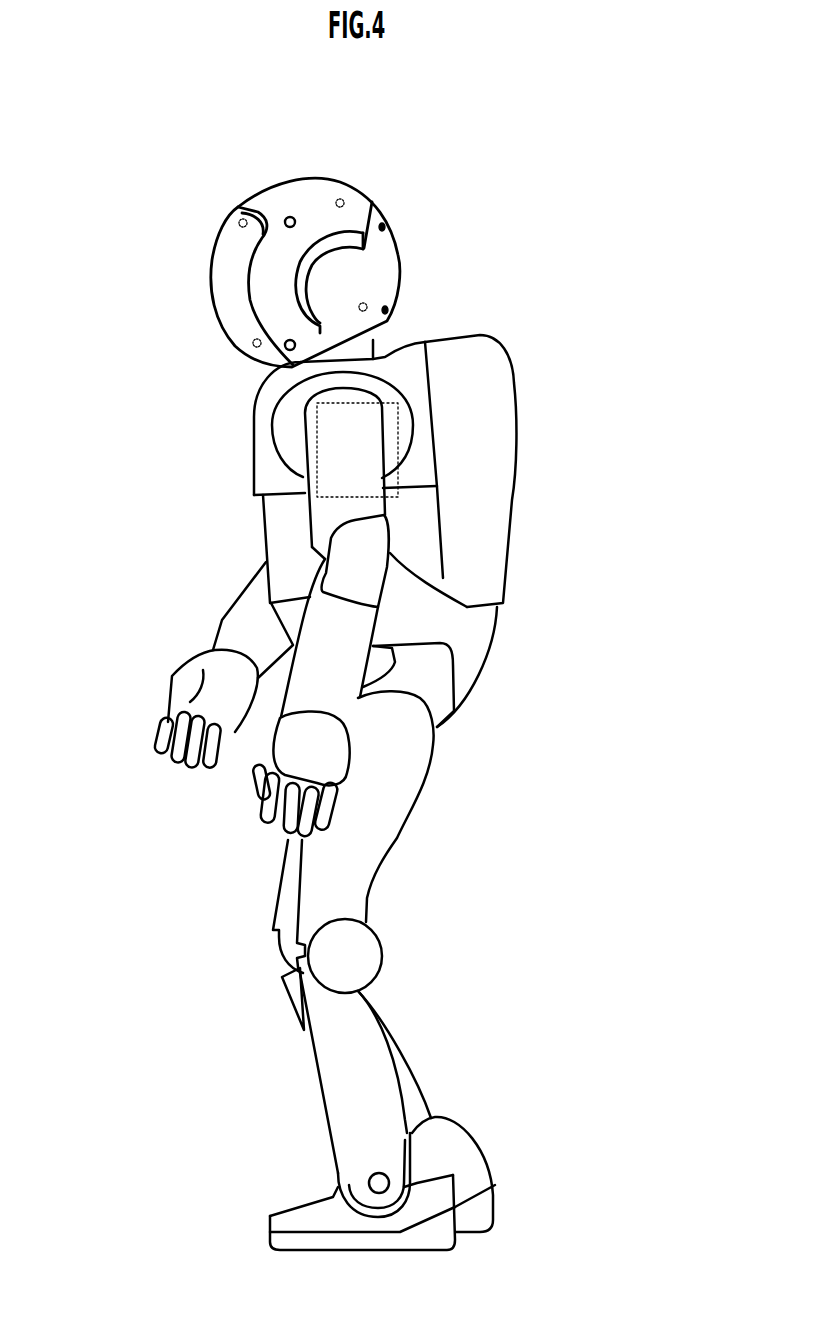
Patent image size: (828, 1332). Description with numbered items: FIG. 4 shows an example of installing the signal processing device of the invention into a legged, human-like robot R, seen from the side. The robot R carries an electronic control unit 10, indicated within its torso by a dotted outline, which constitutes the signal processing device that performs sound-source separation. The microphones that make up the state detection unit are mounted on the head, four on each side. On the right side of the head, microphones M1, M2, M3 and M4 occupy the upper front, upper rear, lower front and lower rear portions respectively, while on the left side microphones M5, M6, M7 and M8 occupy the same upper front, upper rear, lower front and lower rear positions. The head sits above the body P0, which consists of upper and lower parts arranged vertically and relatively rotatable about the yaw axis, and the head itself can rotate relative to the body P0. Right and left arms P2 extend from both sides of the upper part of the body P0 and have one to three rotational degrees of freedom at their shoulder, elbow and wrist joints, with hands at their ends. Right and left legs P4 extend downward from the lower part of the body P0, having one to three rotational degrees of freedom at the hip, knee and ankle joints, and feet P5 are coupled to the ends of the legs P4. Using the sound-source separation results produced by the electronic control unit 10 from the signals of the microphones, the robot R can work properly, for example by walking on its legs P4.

The robot R is at (97, 157).
The microphone M1 is at (238, 217).
The microphone M2 is at (337, 194).
The microphone M3 is at (250, 343).
The microphone M4 is at (356, 303).
The microphone M5 is at (300, 223).
The microphone M6 is at (392, 226).
The microphone M7 is at (302, 346).
The microphone M8 is at (395, 308).
The electronic control unit 10 is at (402, 399).
The body P0 is at (247, 467).
The arms P2 is at (235, 567).
The legs P4 is at (160, 670).
The feet P5 is at (280, 1203).